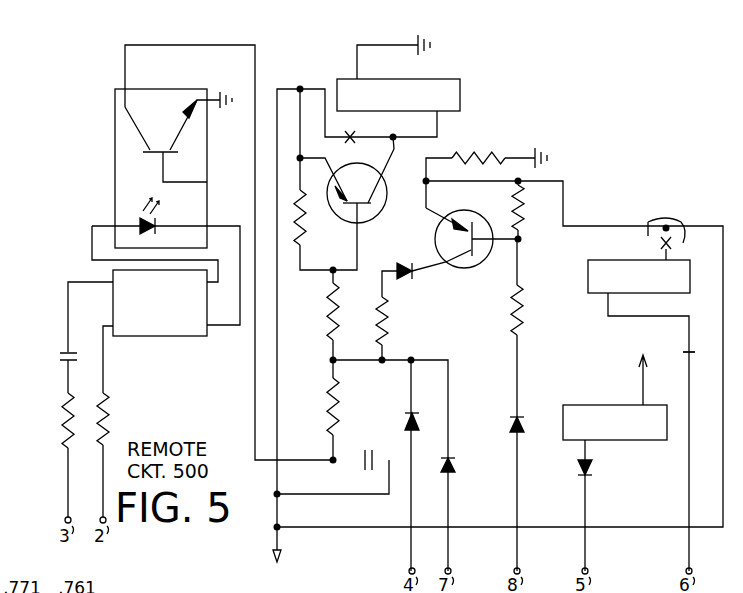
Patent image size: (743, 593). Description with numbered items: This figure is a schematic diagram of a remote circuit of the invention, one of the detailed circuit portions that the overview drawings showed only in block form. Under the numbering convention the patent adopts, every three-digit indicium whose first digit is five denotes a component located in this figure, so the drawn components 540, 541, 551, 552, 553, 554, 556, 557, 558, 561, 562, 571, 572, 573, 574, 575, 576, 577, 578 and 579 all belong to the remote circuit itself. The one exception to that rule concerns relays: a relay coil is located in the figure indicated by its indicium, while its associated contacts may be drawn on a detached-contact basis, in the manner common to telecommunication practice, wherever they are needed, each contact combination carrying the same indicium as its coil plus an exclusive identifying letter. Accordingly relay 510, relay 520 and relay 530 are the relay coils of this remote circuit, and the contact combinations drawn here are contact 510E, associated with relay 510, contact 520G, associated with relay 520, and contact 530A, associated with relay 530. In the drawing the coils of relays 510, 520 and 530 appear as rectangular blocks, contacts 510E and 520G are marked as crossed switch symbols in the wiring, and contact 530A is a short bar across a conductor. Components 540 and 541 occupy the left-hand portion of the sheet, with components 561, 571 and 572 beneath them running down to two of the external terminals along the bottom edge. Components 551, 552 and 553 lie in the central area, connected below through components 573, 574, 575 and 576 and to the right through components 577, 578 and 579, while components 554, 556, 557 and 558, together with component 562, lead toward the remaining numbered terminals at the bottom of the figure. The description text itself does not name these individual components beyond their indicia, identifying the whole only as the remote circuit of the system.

The relay 510 is at (460, 90).
The relay contact 510E is at (675, 225).
The relay 520 is at (613, 260).
The relay contact 520G is at (358, 132).
The relay 530 is at (575, 405).
The relay contact 530A is at (686, 348).
The optical coupler 540 is at (115, 144).
The rectifier 541 is at (170, 338).
The transistor 551 is at (382, 207).
The transistor 552 is at (452, 272).
The diode 553 is at (402, 268).
The diode 554 is at (408, 416).
The diode 556 is at (449, 458).
The diode 557 is at (524, 424).
The diode 558 is at (593, 468).
The capacitor 561 is at (62, 354).
The capacitor 562 is at (378, 436).
The resistor 571 is at (62, 420).
The resistor 572 is at (109, 416).
The resistor 573 is at (306, 230).
The resistor 574 is at (326, 294).
The resistor 575 is at (323, 383).
The resistor 576 is at (388, 306).
The resistor 577 is at (499, 150).
The resistor 578 is at (508, 206).
The resistor 579 is at (523, 314).